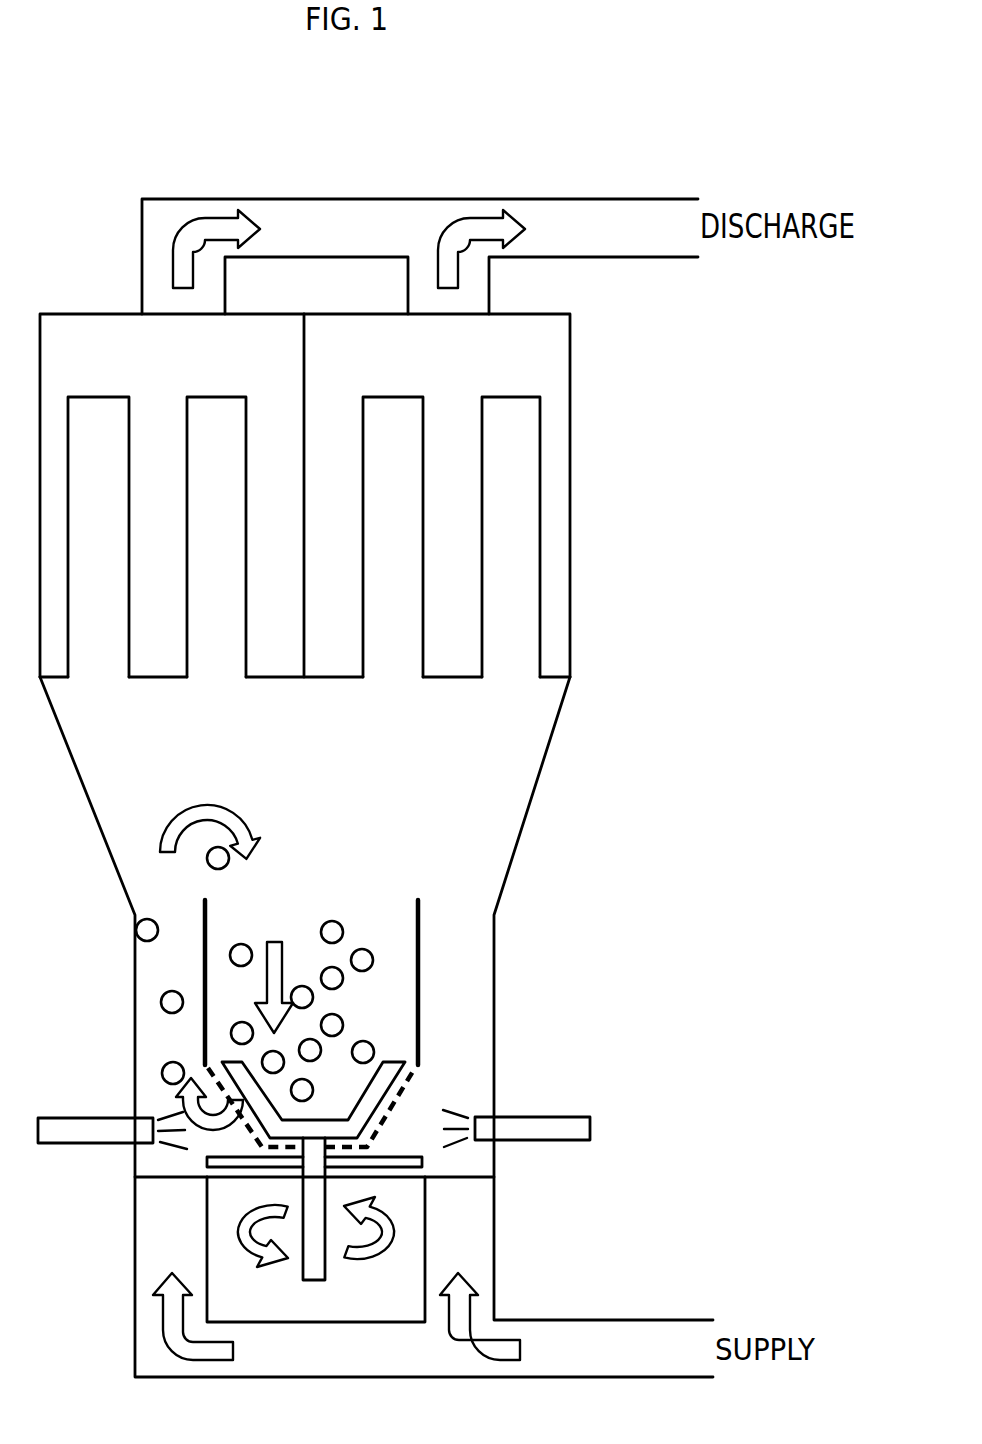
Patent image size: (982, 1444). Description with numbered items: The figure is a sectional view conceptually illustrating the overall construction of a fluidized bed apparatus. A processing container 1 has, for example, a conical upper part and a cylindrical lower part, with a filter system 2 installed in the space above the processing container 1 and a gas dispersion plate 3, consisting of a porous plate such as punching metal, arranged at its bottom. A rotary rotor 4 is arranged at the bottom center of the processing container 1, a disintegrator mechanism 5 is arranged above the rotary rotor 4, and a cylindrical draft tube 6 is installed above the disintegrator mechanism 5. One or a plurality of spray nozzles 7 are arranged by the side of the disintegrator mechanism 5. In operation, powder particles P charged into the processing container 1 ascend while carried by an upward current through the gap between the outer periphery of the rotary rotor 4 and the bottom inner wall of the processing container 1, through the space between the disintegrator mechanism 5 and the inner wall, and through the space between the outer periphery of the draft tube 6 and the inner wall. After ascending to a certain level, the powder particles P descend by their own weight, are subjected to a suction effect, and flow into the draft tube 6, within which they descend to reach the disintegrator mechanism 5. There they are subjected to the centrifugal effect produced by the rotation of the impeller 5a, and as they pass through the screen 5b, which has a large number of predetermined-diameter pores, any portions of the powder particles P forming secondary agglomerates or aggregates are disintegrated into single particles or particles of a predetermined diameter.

The processing container 1 is at (560, 710).
The filter system 2 is at (518, 396).
The gas dispersion plate 3 is at (400, 1180).
The rotary rotor 4 is at (393, 1157).
The disintegrator mechanism 5 is at (404, 1056).
The impeller 5a is at (393, 1060).
The screen 5b is at (413, 1077).
The draft tube 6 is at (418, 940).
The spray nozzle 7 is at (590, 1117).
The powder particles P is at (160, 1000).